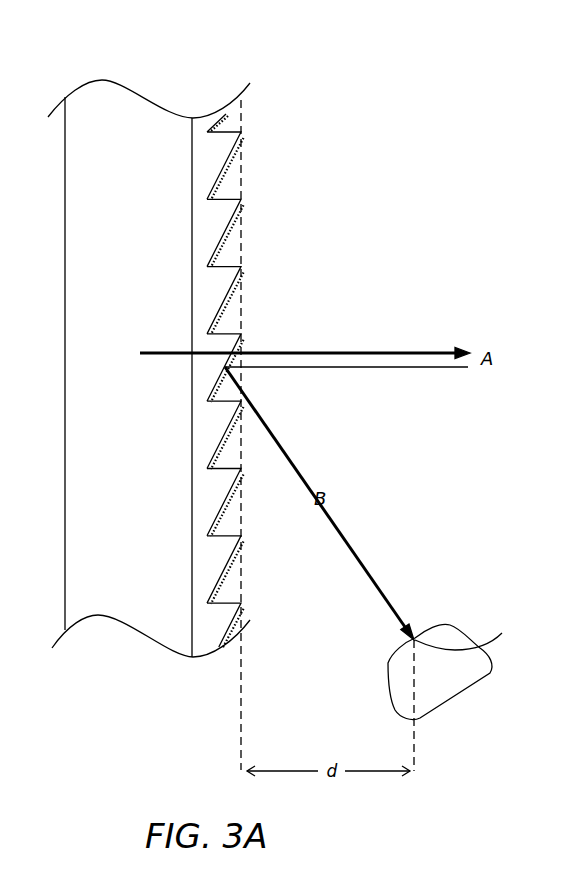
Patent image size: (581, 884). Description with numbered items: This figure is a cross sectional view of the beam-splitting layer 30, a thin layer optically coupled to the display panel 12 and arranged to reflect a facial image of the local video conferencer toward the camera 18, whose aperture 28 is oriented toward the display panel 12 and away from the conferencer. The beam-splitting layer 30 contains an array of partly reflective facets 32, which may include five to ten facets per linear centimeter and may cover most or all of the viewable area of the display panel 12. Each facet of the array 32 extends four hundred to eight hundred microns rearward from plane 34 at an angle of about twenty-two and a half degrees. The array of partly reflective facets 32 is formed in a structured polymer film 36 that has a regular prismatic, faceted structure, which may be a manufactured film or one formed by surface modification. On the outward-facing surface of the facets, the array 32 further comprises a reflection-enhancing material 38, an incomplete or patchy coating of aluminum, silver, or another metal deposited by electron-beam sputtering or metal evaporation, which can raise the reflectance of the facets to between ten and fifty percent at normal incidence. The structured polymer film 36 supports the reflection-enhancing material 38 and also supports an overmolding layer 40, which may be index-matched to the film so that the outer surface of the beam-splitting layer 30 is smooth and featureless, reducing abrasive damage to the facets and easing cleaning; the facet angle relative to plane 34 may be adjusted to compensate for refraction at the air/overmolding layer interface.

The display panel 12 is at (118, 46).
The beam-splitting layer 30 is at (217, 331).
The plane 34 is at (242, 166).
The reflection-enhancing material 38 is at (223, 234).
The overmolding layer 40 is at (235, 240).
The structured polymer film 36 is at (205, 503).
The array of partly reflective facets 32 is at (238, 499).
The aperture 28 is at (502, 633).
The camera 18 is at (476, 653).